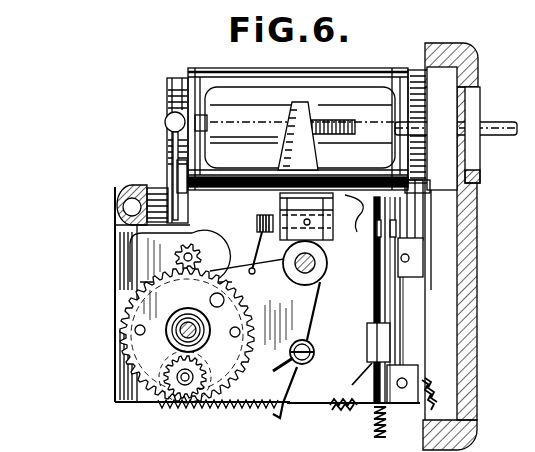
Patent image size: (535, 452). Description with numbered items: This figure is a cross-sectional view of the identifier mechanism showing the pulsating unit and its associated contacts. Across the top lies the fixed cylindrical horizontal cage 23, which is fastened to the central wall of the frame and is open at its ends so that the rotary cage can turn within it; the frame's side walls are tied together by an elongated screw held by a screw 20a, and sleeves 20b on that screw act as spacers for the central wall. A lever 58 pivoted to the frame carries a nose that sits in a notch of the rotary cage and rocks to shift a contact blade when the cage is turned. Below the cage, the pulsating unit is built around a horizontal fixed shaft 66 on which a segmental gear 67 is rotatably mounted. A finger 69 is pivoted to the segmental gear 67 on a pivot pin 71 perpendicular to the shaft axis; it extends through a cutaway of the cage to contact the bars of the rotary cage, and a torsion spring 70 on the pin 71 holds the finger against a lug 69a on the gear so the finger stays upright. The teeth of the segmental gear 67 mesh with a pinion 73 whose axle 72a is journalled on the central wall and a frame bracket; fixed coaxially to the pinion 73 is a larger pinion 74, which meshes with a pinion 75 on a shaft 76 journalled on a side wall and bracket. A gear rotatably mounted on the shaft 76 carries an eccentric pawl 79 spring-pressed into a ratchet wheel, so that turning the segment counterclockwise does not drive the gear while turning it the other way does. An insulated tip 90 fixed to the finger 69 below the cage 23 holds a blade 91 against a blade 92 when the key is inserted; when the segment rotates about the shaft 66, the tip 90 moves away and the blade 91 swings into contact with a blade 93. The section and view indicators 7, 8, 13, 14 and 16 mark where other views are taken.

The section line 7- 7 is at (527, 20).
The section line 8- 8 is at (476, 20).
The section line 13- 13 is at (253, 53).
The section line 14- 14 is at (142, 36).
The section line 16- 16 is at (65, 43).
The screw 20a is at (126, 212).
The sleeve 20b is at (122, 186).
The fixed cylindrical horizontal cage 23 is at (232, 68).
The lever 58 is at (166, 184).
The fixed shaft 66 is at (318, 280).
The segmental gear 67 is at (313, 320).
The finger 69 is at (282, 155).
The lug 69a is at (216, 228).
The torsion spring 70 is at (247, 252).
The pivot pin 71 is at (257, 222).
The axle 72a is at (180, 380).
The pinion 73 is at (184, 404).
The larger pinion 74 is at (200, 407).
The pinion 75 is at (186, 336).
The shaft 76 is at (180, 328).
The eccentric pawl 79 is at (190, 292).
The insulated tip 90 is at (357, 212).
The blade 91 is at (398, 298).
The blade 92 is at (399, 312).
The blade 93 is at (376, 280).